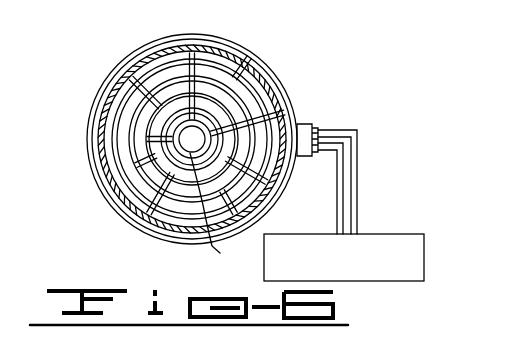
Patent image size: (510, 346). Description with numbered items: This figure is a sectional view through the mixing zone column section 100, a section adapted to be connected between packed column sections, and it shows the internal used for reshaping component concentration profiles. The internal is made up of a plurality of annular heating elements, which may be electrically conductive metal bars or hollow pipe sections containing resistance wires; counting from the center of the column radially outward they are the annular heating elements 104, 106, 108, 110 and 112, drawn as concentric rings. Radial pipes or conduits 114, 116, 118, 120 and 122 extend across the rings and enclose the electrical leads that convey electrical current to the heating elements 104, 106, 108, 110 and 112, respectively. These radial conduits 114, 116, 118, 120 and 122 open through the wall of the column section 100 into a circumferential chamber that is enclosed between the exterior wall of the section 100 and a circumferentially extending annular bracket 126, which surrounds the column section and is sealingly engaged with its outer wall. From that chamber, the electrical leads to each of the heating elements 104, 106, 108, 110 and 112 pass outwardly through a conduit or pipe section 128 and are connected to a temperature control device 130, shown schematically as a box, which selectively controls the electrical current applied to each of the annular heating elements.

The mixing zone column section 100 is at (181, 34).
The annular heating element 104 is at (210, 193).
The annular heating element 106 is at (165, 118).
The annular heating element 108 is at (163, 138).
The annular heating element 110 is at (220, 85).
The annular heating element 112 is at (100, 170).
The radial conduit 114 is at (267, 110).
The radial conduit 116 is at (197, 55).
The radial conduit 118 is at (115, 90).
The radial conduit 120 is at (138, 207).
The radial conduit 122 is at (262, 196).
The annular bracket 126 is at (90, 110).
The conduit or pipe section 128 is at (307, 127).
The temperature control device 130 is at (310, 234).